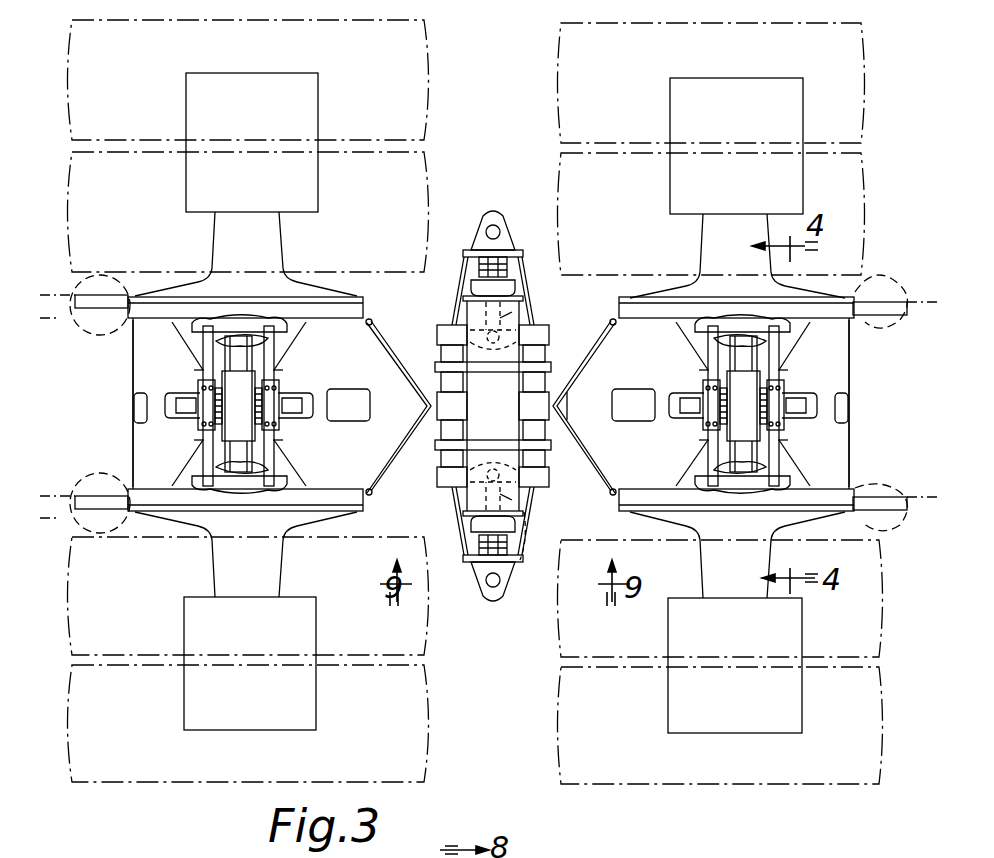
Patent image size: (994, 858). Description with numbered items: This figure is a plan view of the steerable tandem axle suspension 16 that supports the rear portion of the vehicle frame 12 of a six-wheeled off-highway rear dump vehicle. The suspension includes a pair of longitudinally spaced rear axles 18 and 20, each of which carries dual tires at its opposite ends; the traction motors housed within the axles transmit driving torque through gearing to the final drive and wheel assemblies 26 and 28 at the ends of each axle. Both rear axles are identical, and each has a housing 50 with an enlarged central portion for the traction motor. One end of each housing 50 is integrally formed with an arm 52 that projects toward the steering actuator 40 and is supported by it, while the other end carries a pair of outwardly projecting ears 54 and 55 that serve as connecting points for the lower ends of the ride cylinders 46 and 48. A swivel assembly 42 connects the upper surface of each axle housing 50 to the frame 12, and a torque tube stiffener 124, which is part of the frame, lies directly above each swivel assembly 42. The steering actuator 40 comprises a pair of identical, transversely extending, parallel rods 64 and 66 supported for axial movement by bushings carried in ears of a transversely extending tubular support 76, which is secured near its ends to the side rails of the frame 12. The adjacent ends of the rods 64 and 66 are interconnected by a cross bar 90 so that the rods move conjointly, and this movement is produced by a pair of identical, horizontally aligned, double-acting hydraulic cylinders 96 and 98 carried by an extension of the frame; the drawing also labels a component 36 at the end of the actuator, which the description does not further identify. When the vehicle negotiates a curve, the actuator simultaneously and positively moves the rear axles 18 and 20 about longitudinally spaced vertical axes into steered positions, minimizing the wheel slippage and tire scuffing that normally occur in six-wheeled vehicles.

The vehicle frame 12 is at (392, 290).
The steerable tandem axle suspension 16 is at (500, 115).
The rear axle 18 is at (122, 443).
The rear axle 20 is at (650, 288).
The final drive and wheel assembly 26 is at (308, 702).
The final drive and wheel assembly 28 is at (312, 86).
The upper pivot bracket 36 is at (514, 262).
The steering actuator 40 is at (497, 602).
The swivel assembly 42 is at (290, 384).
The ride cylinder 46 is at (106, 540).
The ride cylinder 48 is at (124, 284).
The axle housing 50 is at (133, 375).
The arm 52 is at (437, 380).
The ear 54 is at (112, 534).
The ear 55 is at (118, 300).
The rod 64 is at (436, 446).
The rod 66 is at (550, 460).
The tubular support 76 is at (570, 424).
The cross bar 90 is at (548, 336).
The double-acting hydraulic cylinder 96 is at (540, 480).
The double-acting hydraulic cylinder 98 is at (512, 316).
The torque tube stiffener 124 is at (233, 482).